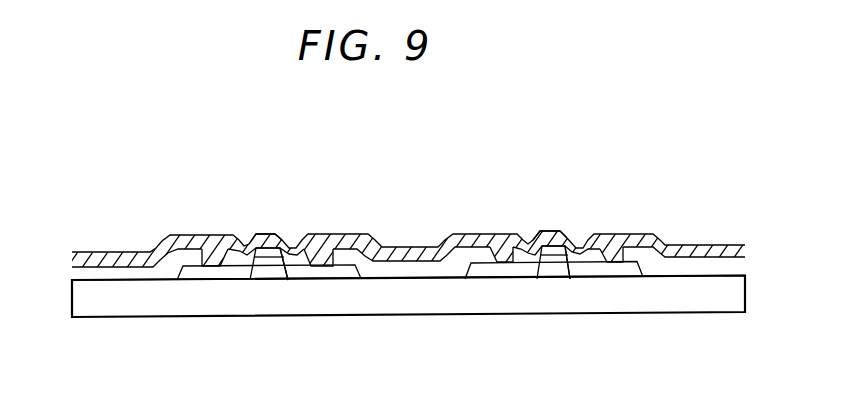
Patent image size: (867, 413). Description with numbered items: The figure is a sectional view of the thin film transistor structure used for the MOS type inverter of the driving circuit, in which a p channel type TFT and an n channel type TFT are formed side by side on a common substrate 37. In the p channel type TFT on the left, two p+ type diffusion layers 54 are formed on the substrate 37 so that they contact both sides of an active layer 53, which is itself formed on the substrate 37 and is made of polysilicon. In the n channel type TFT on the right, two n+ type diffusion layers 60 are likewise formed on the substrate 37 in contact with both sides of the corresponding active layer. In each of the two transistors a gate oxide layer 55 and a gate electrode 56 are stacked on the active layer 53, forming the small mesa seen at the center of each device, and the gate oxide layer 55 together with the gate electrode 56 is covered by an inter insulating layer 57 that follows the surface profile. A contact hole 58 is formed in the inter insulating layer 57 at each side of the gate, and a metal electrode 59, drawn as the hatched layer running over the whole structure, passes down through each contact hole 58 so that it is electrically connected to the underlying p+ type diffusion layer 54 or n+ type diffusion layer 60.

The substrate 37 is at (112, 300).
The active layer 53 is at (262, 277).
The p+ type diffusion layer 54 is at (196, 273).
The gate oxide layer 55 is at (279, 284).
The gate electrode 56 is at (274, 248).
The inter insulating layer 57 is at (263, 234).
The contact hole 58 is at (217, 257).
The metal electrode 59 is at (107, 258).
The n+ type diffusion layer 60 is at (480, 272).